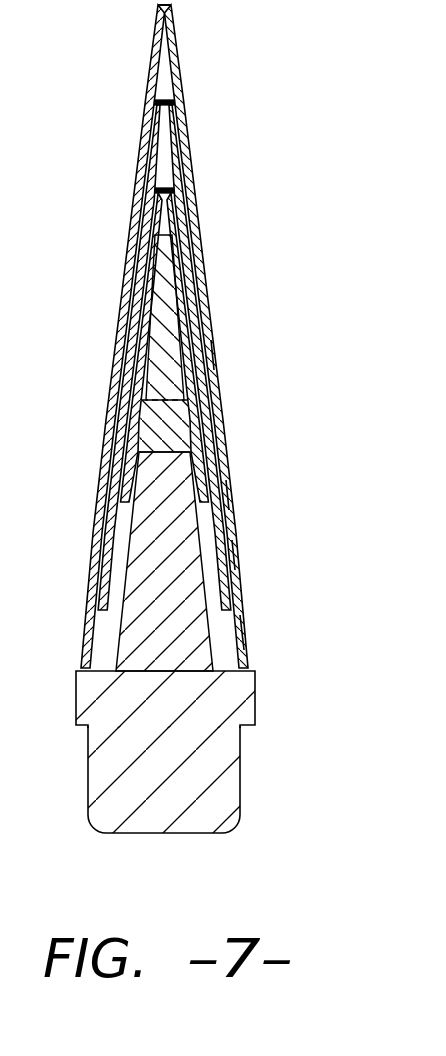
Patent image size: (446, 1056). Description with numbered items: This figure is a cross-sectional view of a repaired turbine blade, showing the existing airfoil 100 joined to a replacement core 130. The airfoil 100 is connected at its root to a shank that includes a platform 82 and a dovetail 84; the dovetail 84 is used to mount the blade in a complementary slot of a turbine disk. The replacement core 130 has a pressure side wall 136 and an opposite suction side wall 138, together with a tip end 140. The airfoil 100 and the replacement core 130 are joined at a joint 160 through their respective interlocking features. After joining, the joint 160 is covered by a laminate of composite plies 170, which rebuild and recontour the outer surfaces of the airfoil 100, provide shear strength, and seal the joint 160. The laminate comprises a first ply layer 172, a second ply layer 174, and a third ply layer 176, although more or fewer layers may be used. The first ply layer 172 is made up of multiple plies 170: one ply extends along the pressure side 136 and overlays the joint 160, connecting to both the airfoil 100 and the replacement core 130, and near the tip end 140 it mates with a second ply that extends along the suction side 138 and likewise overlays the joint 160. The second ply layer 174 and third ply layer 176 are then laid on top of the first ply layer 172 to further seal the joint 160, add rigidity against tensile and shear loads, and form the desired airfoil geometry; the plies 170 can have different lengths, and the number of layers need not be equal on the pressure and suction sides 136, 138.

The platform 82 is at (102, 697).
The dovetail 84 is at (125, 773).
The airfoil 100 is at (147, 560).
The replacement core 130 is at (205, 312).
The pressure side wall 136 is at (122, 342).
The suction side wall 138 is at (212, 355).
The tip end 140 is at (137, 190).
The joint 160 is at (172, 423).
The composite plies 170 is at (210, 202).
The first ply layer 172 is at (227, 495).
The second ply layer 174 is at (240, 555).
The third ply layer 176 is at (245, 632).